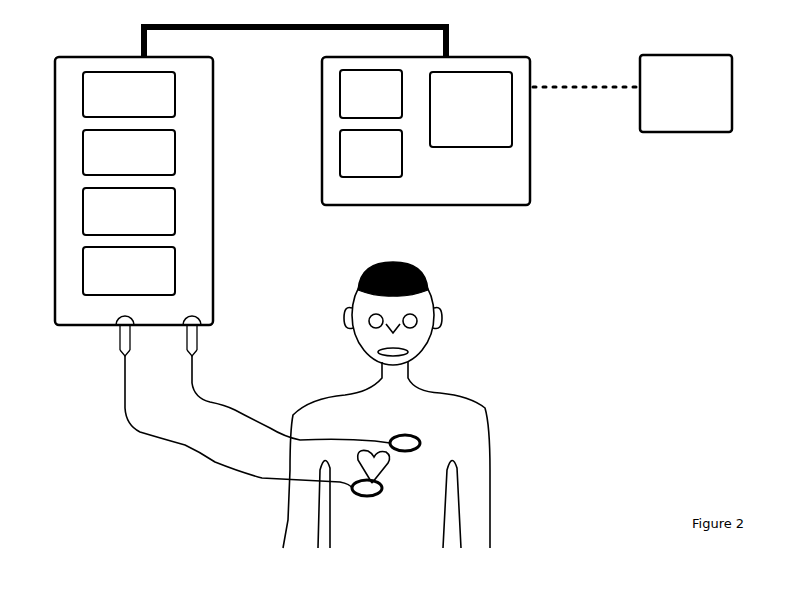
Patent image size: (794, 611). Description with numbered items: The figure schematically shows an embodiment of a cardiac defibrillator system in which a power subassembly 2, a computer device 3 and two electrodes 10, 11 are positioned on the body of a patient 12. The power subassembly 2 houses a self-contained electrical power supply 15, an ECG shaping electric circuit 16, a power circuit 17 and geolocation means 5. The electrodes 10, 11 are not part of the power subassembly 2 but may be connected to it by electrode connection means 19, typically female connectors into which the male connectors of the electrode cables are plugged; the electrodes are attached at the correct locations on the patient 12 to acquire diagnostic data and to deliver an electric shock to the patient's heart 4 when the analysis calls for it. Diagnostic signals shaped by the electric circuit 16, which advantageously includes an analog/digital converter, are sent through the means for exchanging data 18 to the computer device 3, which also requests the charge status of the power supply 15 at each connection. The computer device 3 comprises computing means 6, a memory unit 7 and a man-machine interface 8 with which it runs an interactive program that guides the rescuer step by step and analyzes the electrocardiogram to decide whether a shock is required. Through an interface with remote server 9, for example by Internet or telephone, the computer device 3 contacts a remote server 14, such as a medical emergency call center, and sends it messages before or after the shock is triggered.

The power subassembly 2 is at (228, 203).
The computer device 3 is at (304, 128).
The patient's heart 4 is at (386, 458).
The geolocation means 5 is at (129, 271).
The computing means 6 is at (371, 94).
The memory unit 7 is at (371, 153).
The man-machine interface 8 is at (471, 109).
The interface with remote server 9 is at (586, 72).
The electrode 10 is at (421, 440).
The electrode 11 is at (383, 487).
The patient 12 is at (450, 411).
The remote server 14 is at (686, 93).
The self-contained electrical power supply 15 is at (129, 94).
The ECG shaping electric circuit 16 is at (129, 152).
The power circuit 17 is at (129, 211).
The means for exchanging data 18 is at (295, 42).
The electrode connection means 19 is at (182, 330).